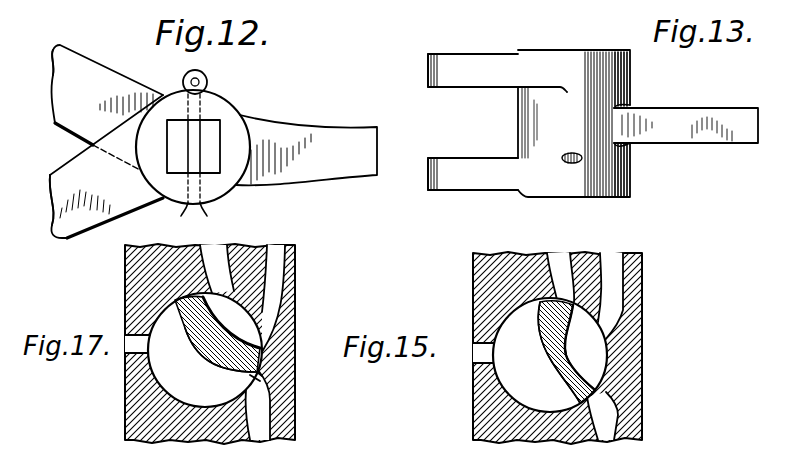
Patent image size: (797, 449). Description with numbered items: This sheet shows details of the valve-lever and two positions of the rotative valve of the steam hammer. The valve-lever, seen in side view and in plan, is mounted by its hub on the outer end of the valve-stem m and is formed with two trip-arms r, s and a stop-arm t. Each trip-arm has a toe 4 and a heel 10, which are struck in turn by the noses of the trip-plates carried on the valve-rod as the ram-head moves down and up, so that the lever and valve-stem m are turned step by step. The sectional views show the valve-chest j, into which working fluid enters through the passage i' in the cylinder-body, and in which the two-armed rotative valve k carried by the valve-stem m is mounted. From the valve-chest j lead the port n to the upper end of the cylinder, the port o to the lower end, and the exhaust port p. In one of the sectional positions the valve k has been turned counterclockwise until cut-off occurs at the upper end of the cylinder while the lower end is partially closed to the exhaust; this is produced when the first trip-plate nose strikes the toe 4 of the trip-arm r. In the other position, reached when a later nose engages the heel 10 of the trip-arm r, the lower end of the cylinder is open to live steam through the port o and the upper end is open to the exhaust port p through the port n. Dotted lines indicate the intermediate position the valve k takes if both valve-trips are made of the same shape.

In FIG. 12, the toe 4 is at (55, 44).
In FIG. 13, the toe 4 is at (427, 71).
In FIG. 12, the heel 10 is at (55, 123).
In FIG. 13, the heel 10 is at (427, 176).
In FIG. 12, the trip-arm s is at (103, 82).
In FIG. 13, the trip-arm s is at (470, 65).
In FIG. 12, the trip-arm r is at (128, 212).
In FIG. 13, the trip-arm r is at (472, 165).
In FIG. 12, the stop-arm t is at (360, 134).
In FIG. 13, the stop-arm t is at (727, 114).
In FIG. 17, the port n is at (212, 250).
In FIG. 15, the port n is at (553, 256).
In FIG. 17, the exhaust port p is at (274, 252).
In FIG. 15, the exhaust port p is at (617, 261).
In FIG. 17, the port o is at (258, 402).
In FIG. 15, the port o is at (600, 410).
In FIG. 17, the passage i' is at (119, 360).
In FIG. 15, the passage i' is at (457, 371).
In FIG. 17, the rotative valve k is at (195, 327).
In FIG. 15, the rotative valve k is at (548, 339).
In FIG. 17, the valve-stem m is at (190, 357).
In FIG. 15, the valve-stem m is at (537, 357).
In FIG. 17, the valve-chest j is at (213, 370).
In FIG. 15, the valve-chest j is at (538, 365).